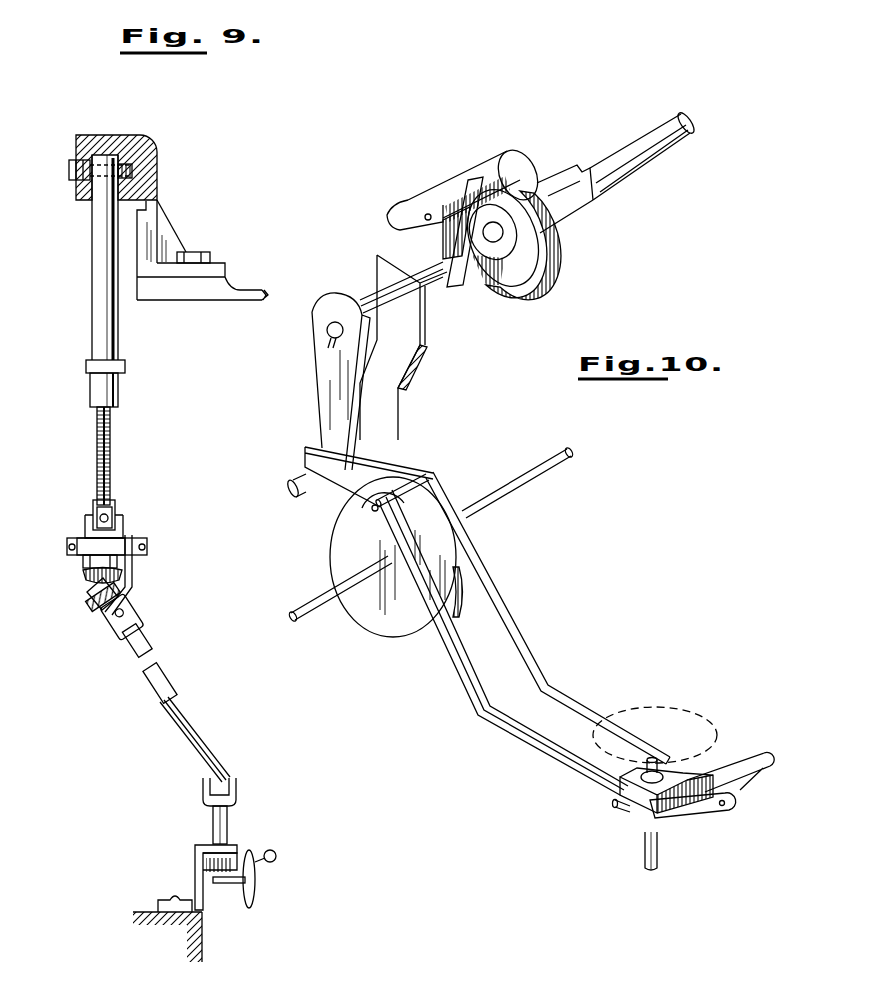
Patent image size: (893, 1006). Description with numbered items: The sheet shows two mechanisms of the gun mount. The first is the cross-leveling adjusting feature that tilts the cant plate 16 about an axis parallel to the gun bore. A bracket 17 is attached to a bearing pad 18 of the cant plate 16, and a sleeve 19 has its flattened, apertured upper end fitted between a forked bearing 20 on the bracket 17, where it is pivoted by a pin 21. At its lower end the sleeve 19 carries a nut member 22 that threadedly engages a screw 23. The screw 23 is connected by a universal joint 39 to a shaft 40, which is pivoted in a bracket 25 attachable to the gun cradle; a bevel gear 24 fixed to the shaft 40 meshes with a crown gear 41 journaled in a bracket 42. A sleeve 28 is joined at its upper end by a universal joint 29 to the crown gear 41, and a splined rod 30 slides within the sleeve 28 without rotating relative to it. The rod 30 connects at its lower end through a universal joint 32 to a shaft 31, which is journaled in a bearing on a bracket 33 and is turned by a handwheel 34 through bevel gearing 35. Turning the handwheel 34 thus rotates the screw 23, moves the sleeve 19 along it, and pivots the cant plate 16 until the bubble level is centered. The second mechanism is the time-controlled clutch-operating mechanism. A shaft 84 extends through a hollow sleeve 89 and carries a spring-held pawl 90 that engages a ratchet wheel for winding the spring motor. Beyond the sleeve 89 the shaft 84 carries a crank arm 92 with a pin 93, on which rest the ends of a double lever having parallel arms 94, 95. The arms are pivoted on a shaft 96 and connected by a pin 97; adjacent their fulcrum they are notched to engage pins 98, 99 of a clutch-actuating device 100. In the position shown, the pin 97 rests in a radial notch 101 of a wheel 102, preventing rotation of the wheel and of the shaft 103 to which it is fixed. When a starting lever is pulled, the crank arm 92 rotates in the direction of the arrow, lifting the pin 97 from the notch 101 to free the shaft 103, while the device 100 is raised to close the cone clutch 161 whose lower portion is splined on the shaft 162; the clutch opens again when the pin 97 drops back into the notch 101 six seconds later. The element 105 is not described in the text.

In FIG. 9, the cant plate 16 is at (268, 300).
In FIG. 9, the bracket 17 is at (158, 170).
In FIG. 9, the bearing pad 18 is at (200, 283).
In FIG. 9, the sleeve 19 is at (102, 272).
In FIG. 9, the forked bearing 20 is at (80, 190).
In FIG. 9, the pin 21 is at (69, 168).
In FIG. 9, the nut member 22 is at (110, 388).
In FIG. 9, the screw 23 is at (97, 452).
In FIG. 9, the bevel gear 24 is at (88, 593).
In FIG. 9, the bracket 25 is at (148, 548).
In FIG. 9, the sleeve 28 is at (148, 686).
In FIG. 9, the universal joint 29 is at (110, 640).
In FIG. 9, the splined rod 30 is at (208, 768).
In FIG. 9, the shaft 31 is at (213, 822).
In FIG. 9, the universal joint 32 is at (236, 786).
In FIG. 9, the bracket 33 is at (176, 902).
In FIG. 9, the handwheel 34 is at (257, 892).
In FIG. 9, the bevel gearing 35 is at (224, 896).
In FIG. 9, the universal joint 39 is at (90, 510).
In FIG. 9, the shaft 40 is at (88, 571).
In FIG. 9, the crown gear 41 is at (96, 602).
In FIG. 9, the bracket 42 is at (133, 588).
In FIG. 10, the shaft 84 is at (440, 270).
In FIG. 10, the sleeve 89 is at (583, 207).
In FIG. 10, the pawl 90 is at (466, 178).
In FIG. 10, the crank arm 92 is at (320, 370).
In FIG. 10, the pin 93 is at (315, 511).
In FIG. 10, the arm 94 is at (444, 640).
In FIG. 10, the arm 95 is at (508, 612).
In FIG. 10, the shaft 96 is at (738, 797).
In FIG. 10, the pin 97 is at (428, 462).
In FIG. 10, the pin 98 is at (620, 805).
In FIG. 10, the pin 99 is at (750, 770).
In FIG. 10, the clutch-actuating device 100 is at (640, 773).
In FIG. 10, the radial notch 101 is at (405, 500).
In FIG. 10, the wheel 102 is at (370, 600).
In FIG. 10, the shaft 103 is at (538, 480).
In FIG. 10, the clamp bracket 105 is at (420, 339).
In FIG. 10, the cone clutch 161 is at (710, 733).
In FIG. 10, the shaft 162 is at (645, 847).